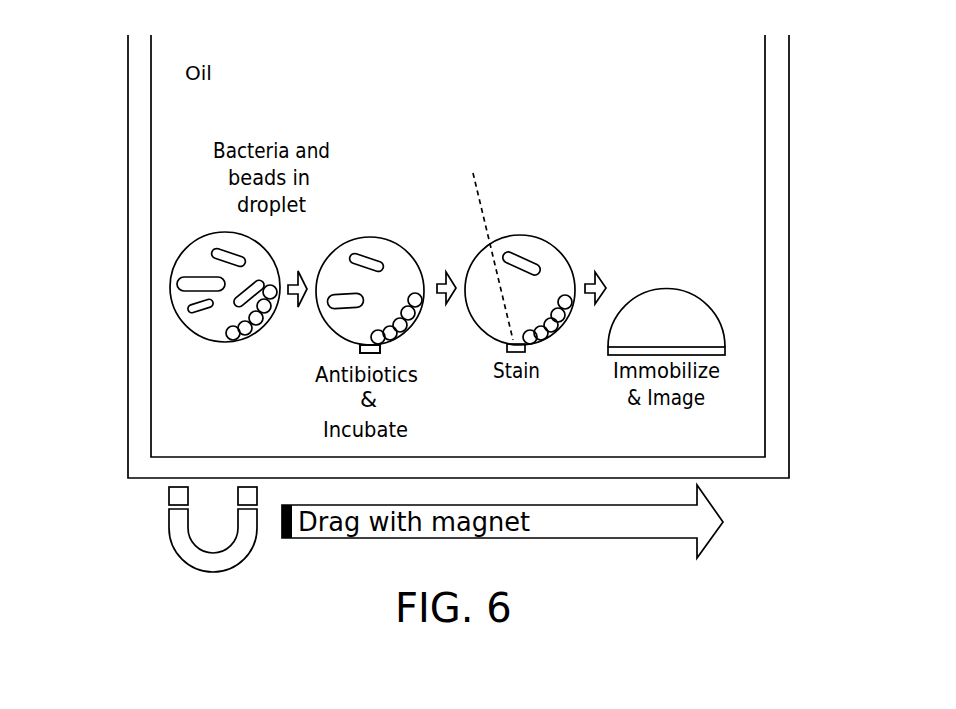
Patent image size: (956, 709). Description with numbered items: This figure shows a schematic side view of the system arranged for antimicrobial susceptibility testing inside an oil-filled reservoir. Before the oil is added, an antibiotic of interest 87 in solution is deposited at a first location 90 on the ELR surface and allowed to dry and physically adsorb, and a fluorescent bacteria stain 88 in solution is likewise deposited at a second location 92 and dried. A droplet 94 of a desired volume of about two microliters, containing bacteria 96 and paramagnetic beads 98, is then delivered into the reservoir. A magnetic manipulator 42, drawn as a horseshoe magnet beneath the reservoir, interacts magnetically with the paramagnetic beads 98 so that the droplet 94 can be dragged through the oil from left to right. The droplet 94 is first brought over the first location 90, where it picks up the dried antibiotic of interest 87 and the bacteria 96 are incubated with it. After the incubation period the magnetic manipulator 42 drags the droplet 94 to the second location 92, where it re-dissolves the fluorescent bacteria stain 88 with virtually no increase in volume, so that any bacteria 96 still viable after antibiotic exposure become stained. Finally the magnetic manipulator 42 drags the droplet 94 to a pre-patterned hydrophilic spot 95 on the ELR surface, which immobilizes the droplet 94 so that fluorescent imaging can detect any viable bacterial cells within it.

The magnetic manipulator 42 is at (247, 556).
The antibiotic of interest 87 is at (360, 349).
The fluorescent bacteria stain 88 is at (480, 241).
The first location 90 is at (373, 340).
The second location 92 is at (525, 351).
The droplet 94 is at (165, 310).
The hydrophilic spot 95 is at (725, 350).
The bacteria 96 is at (218, 250).
The paramagnetic beads 98 is at (268, 316).